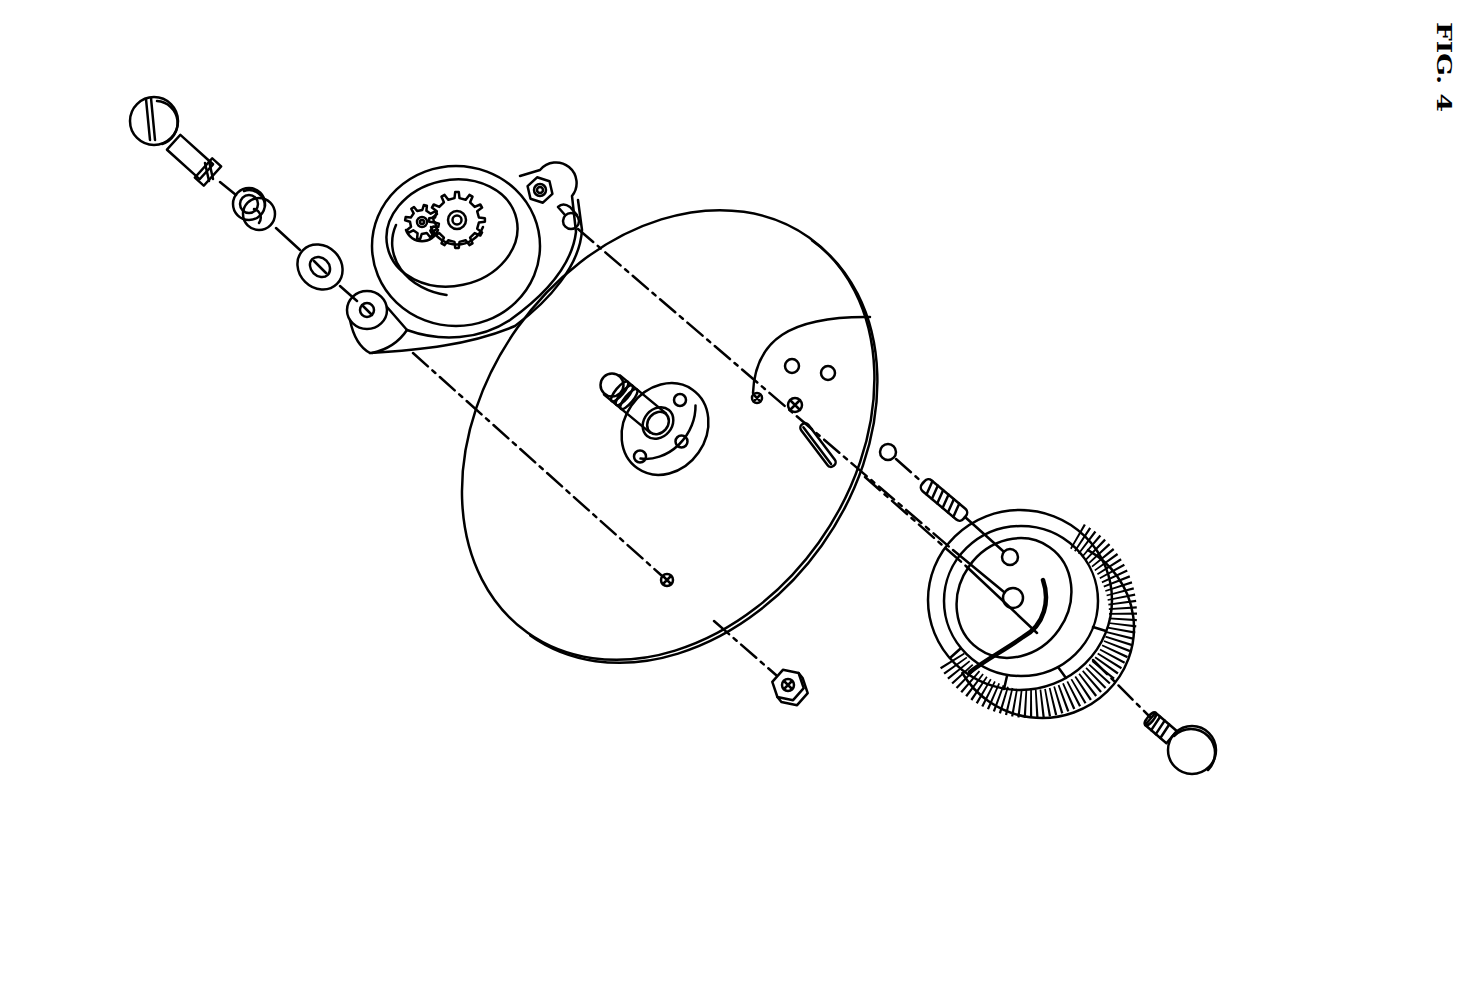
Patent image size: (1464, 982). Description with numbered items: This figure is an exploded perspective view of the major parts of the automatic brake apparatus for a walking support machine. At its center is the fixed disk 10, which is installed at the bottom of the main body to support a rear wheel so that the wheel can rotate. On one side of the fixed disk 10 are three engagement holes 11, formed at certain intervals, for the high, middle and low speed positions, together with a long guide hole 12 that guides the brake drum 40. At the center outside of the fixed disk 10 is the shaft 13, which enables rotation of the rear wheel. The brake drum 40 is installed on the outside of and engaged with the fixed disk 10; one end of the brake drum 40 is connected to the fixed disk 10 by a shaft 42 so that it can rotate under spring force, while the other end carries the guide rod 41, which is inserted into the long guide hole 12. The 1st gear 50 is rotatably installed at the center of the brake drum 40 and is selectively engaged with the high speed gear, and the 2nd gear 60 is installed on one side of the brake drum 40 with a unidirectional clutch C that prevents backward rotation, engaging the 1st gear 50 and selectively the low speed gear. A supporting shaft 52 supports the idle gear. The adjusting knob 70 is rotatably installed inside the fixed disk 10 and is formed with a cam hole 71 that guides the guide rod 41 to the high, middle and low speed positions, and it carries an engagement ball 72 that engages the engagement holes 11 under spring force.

The fixed disk 10 is at (490, 597).
The engagement holes 11 is at (834, 371).
The long guide hole 12 is at (815, 424).
The shaft 13 is at (632, 375).
The brake drum 40 is at (383, 209).
The guide rod 41 is at (580, 215).
The shaft 42 is at (182, 158).
The 1st gear 50 is at (412, 214).
The unidirectional clutch C is at (457, 199).
The 2nd gear 60 is at (493, 203).
The adjusting knob 70 is at (1146, 592).
The cam hole 71 is at (1067, 573).
The engagement ball 72 is at (897, 447).
The supporting shaft 52 is at (957, 490).